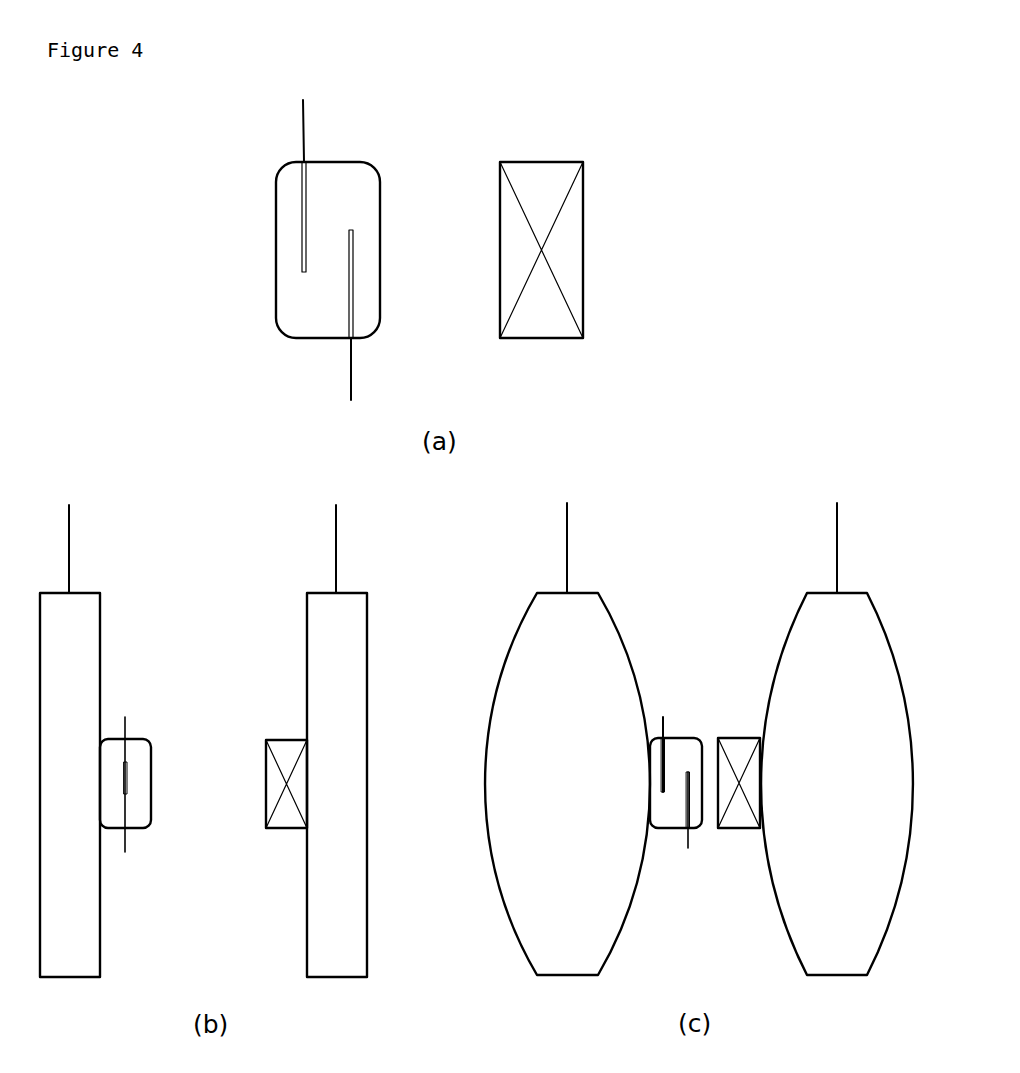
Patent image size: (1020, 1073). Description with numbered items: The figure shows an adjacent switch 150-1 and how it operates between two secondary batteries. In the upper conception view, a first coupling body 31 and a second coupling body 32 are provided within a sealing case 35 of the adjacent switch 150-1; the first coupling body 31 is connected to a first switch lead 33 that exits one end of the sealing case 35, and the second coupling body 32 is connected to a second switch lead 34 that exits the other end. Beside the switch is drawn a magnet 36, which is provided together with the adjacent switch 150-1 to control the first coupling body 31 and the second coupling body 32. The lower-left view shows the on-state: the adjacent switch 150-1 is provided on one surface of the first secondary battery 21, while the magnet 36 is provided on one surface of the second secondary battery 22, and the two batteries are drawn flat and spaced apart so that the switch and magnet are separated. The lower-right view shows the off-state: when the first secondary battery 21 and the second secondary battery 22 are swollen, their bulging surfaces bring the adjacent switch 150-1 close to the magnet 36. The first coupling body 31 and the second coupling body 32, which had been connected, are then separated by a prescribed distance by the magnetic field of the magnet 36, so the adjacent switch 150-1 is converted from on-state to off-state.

The first secondary battery 21 is at (83, 593).
The second secondary battery 22 is at (352, 592).
The first coupling body 31 is at (302, 218).
The second coupling body 32 is at (354, 289).
The first switch lead 33 is at (352, 367).
The second switch lead 34 is at (305, 130).
The sealing case 35 is at (276, 297).
The magnet 36 is at (533, 162).
The adjacent switch 150-1 is at (147, 723).